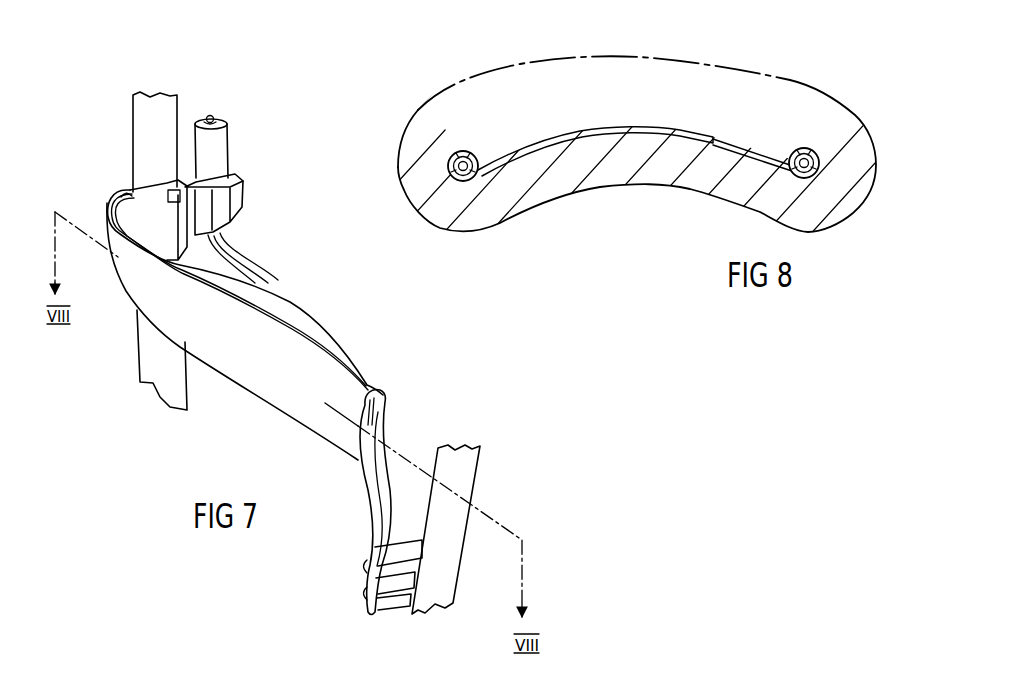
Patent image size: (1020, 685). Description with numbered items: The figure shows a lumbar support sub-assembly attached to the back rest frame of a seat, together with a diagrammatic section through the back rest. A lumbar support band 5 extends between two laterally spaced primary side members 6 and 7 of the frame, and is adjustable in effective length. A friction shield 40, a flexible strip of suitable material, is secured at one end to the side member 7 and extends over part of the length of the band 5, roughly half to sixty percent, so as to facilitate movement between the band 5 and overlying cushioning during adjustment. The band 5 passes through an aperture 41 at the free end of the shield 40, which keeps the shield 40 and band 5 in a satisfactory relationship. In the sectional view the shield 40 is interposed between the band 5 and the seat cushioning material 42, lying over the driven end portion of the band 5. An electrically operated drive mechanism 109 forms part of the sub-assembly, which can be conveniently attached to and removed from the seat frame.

In FIG. 7, the lumbar support band 5 is at (316, 312).
In FIG. 8, the lumbar support band 5 is at (593, 125).
In FIG. 7, the primary side member 6 is at (457, 484).
In FIG. 8, the primary side member 6 is at (811, 150).
In FIG. 7, the primary side member 7 is at (147, 133).
In FIG. 8, the primary side member 7 is at (467, 153).
In FIG. 7, the shield 40 is at (252, 377).
In FIG. 8, the shield 40 is at (563, 150).
In FIG. 7, the aperture 41 is at (383, 418).
In FIG. 8, the seat cushioning material 42 is at (641, 174).
In FIG. 7, the electrically operated drive mechanism 109 is at (240, 151).